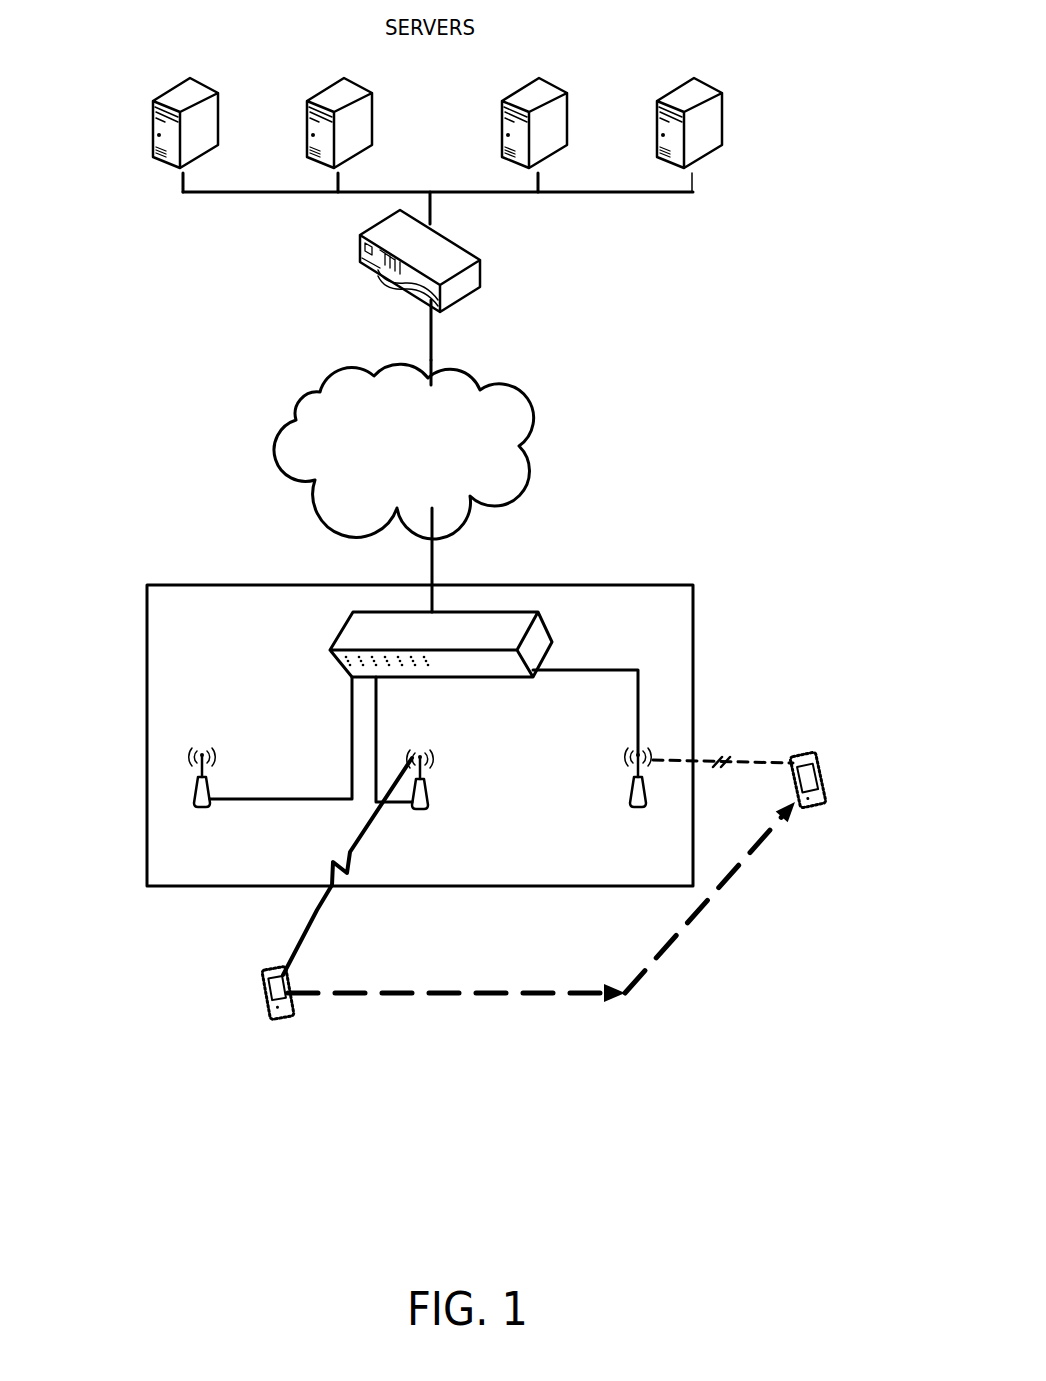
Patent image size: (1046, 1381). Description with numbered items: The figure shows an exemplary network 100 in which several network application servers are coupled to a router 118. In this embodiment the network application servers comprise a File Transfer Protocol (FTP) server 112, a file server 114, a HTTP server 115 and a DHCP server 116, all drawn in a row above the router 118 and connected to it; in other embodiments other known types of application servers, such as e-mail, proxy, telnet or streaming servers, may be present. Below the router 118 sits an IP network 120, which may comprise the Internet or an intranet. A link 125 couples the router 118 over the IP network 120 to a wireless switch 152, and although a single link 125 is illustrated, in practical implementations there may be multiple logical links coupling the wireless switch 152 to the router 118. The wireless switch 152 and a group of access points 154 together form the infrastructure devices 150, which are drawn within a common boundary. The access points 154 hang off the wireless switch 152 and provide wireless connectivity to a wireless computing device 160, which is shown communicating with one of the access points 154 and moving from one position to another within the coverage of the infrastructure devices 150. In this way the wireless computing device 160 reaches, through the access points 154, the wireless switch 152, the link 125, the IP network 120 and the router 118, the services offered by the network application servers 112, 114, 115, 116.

The network 100 is at (772, 37).
The File Transfer Protocol (FTP) server 112 is at (153, 102).
The file server 114 is at (307, 102).
The DHCP server 116 is at (502, 102).
The HTTP server 115 is at (657, 102).
The router 118 is at (362, 233).
The IP network 120 is at (286, 419).
The link 125 is at (434, 552).
The infrastructure devices 150 is at (146, 692).
The wireless switch 152 is at (553, 642).
The access points 154 is at (210, 785).
The wireless computing device 160 is at (793, 760).